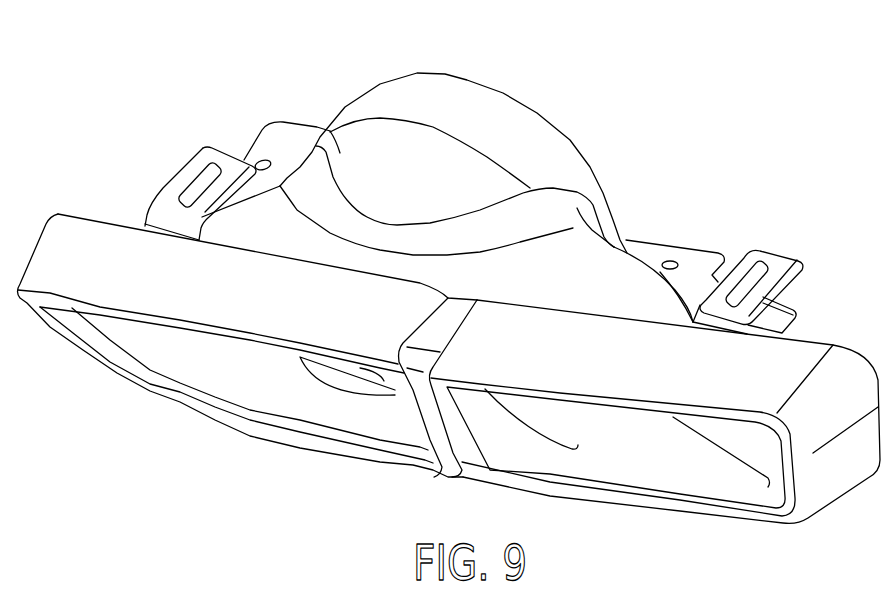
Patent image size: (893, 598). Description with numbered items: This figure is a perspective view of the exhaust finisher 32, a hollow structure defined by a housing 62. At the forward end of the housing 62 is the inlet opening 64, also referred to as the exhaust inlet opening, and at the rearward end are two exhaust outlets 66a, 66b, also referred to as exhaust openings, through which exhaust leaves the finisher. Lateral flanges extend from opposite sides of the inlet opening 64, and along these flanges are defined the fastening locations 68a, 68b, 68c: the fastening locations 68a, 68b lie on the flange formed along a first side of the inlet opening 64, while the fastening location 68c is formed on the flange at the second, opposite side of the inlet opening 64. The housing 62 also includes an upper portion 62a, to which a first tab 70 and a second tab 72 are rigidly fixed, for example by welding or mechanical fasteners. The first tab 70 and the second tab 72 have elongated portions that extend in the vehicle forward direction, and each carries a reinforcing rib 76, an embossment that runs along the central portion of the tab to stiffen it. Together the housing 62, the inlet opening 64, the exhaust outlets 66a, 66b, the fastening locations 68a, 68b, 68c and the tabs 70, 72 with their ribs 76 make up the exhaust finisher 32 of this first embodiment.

The exhaust finisher 32 is at (540, 52).
The housing 62 is at (620, 293).
The upper portion 62a is at (683, 310).
The inlet opening 64 is at (570, 139).
The exhaust outlet 66a is at (268, 388).
The exhaust outlet 66b is at (625, 448).
The fastening location 68a is at (773, 315).
The fastening location 68b is at (663, 248).
The fastening location 68c is at (287, 142).
The first tab 70 is at (770, 258).
The second tab 72 is at (220, 160).
The reinforcing rib 76 is at (195, 188).